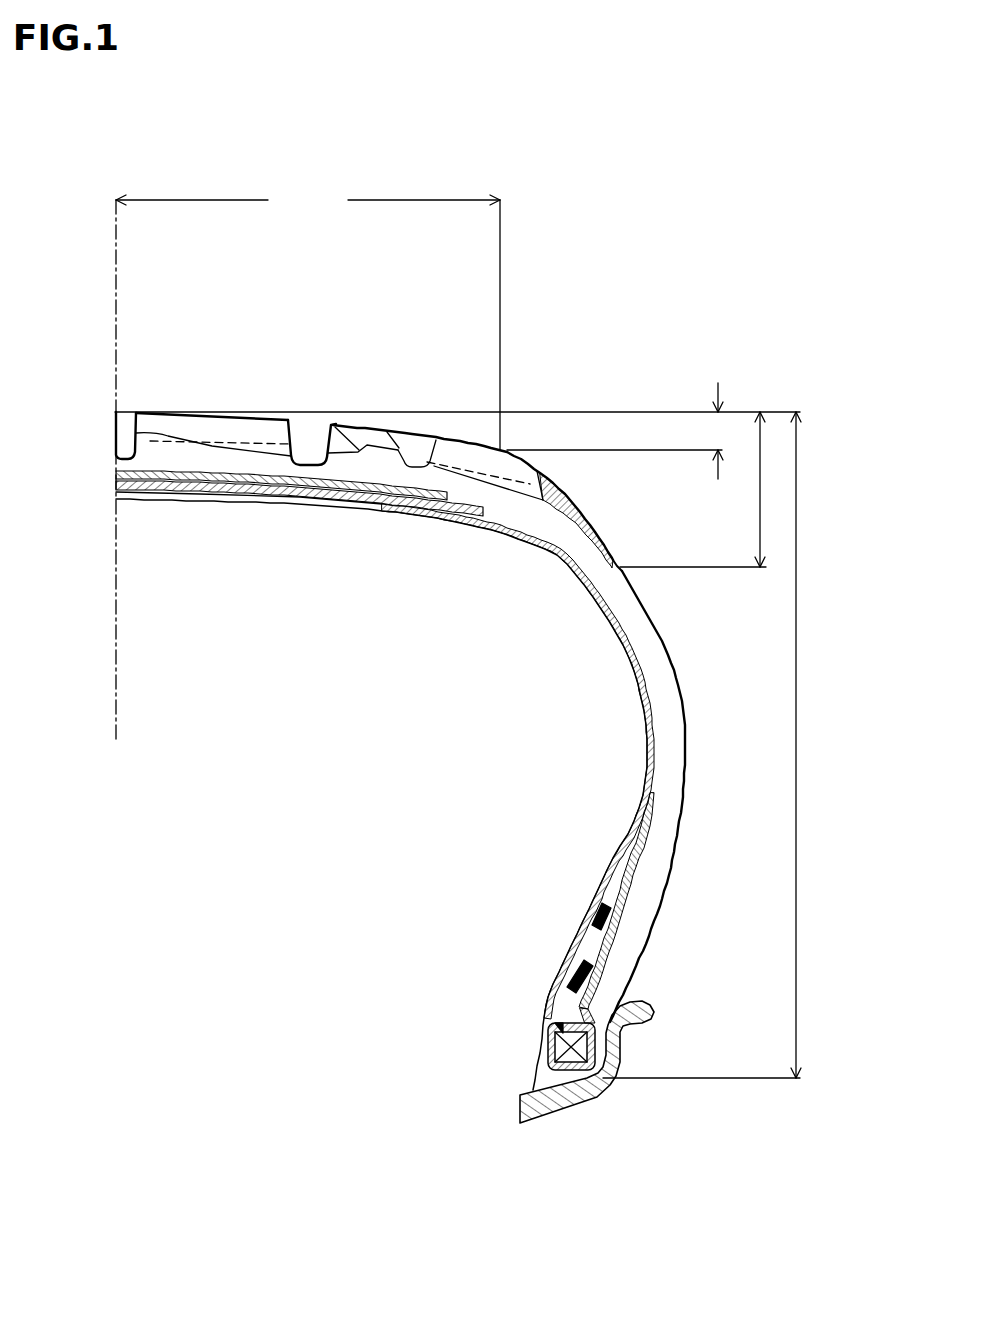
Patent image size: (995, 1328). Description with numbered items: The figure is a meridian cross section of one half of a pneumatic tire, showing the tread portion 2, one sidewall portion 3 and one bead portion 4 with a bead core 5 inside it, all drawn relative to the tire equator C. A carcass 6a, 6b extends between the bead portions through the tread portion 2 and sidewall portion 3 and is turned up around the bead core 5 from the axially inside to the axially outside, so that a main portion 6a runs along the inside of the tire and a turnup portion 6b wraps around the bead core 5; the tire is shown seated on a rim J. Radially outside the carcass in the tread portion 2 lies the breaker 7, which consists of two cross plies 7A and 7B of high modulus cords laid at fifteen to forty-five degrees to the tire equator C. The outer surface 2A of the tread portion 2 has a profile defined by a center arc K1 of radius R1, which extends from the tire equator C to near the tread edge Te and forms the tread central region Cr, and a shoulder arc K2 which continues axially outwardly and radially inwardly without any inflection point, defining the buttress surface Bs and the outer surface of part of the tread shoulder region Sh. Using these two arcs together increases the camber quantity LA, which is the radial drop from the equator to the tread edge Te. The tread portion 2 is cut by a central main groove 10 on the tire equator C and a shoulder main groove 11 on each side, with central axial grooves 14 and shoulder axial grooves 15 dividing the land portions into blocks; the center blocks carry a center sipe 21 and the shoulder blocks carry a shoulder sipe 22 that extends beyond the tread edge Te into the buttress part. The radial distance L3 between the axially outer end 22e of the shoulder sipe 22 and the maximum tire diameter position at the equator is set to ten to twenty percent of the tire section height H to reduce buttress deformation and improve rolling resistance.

The tread portion 2 is at (425, 408).
The outer surface of the tread portion 2A is at (364, 444).
The sidewall portion 3 is at (694, 707).
The bead portion 4 is at (674, 960).
The bead core 5 is at (554, 1043).
The main portion 6a is at (652, 733).
The turnup portion 6b is at (653, 807).
The breaker 7 is at (299, 558).
The breaker ply 7A is at (154, 481).
The breaker ply 7B is at (217, 482).
The central main groove 10 is at (128, 430).
The shoulder main groove 11 is at (310, 444).
The central axial groove 14 is at (247, 451).
The shoulder axial groove 15 is at (424, 464).
The center sipe 21 is at (197, 440).
The shoulder sipe 22 is at (460, 460).
The axially outer end of the shoulder sipe 22e is at (619, 565).
The rim J is at (563, 1097).
The tire equator C is at (117, 454).
The tread central region Cr is at (152, 412).
The tread edge Te is at (524, 325).
The buttress surface Bs is at (547, 474).
The center arc K1 is at (328, 455).
The shoulder arc K2 is at (527, 497).
The radius of the center arc R1 is at (535, 475).
The tread shoulder region Sh is at (433, 440).
The camber quantity LA is at (715, 431).
The radial distance L3 is at (762, 489).
The tire section height H is at (795, 745).